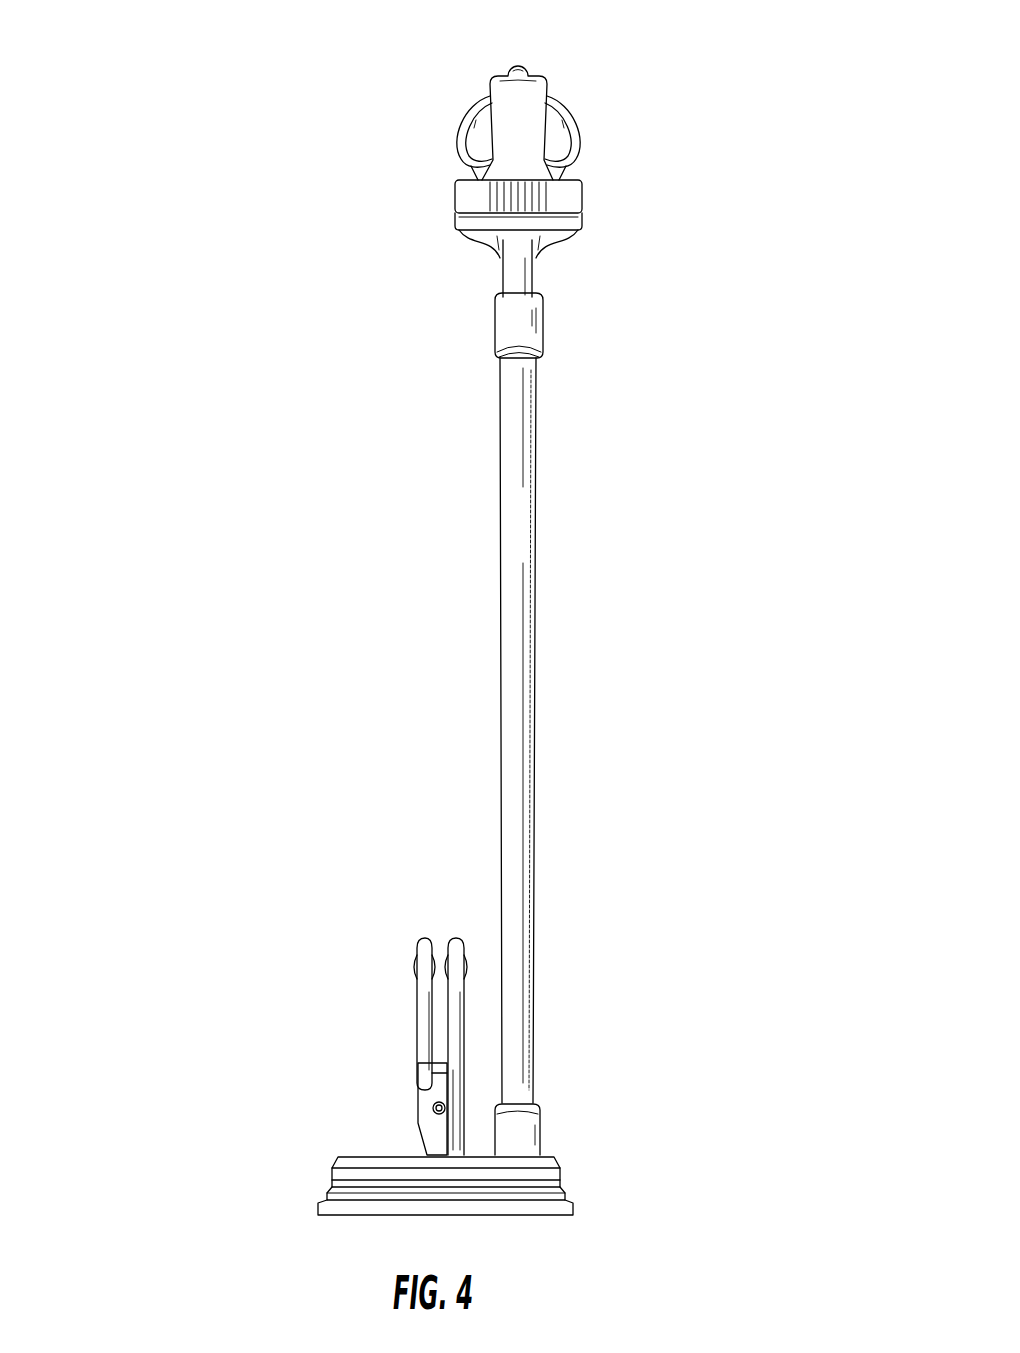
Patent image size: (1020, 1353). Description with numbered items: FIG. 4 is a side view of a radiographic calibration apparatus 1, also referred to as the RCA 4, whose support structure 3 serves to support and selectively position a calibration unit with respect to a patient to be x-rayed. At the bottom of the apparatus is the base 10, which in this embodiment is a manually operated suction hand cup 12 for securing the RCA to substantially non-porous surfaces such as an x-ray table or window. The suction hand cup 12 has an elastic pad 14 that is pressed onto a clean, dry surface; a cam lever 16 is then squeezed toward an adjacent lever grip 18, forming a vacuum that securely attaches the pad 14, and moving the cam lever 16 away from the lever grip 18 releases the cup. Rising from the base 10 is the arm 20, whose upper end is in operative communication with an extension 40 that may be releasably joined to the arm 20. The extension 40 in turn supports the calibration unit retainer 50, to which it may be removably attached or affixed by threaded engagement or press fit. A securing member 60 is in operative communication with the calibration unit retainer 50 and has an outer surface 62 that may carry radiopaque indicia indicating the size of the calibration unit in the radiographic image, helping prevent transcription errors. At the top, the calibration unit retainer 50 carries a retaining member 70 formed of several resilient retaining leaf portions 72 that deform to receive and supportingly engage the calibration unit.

The radiographic calibration apparatus 1 is at (160, 242).
The support structure 3 is at (714, 659).
The radiographic calibration apparatus 4 is at (316, 440).
The base 10 is at (298, 1149).
The suction hand cup 12 is at (560, 1177).
The elastic pad 14 is at (556, 1213).
The cam lever 16 is at (423, 937).
The lever grip 18 is at (455, 938).
The arm 20 is at (528, 533).
The extension 40 is at (523, 275).
The calibration unit retainer 50 is at (595, 56).
The securing member 60 is at (480, 233).
The outer surface 62 is at (518, 205).
The retaining member 70 is at (499, 88).
The retaining leaf portions 72 is at (533, 100).